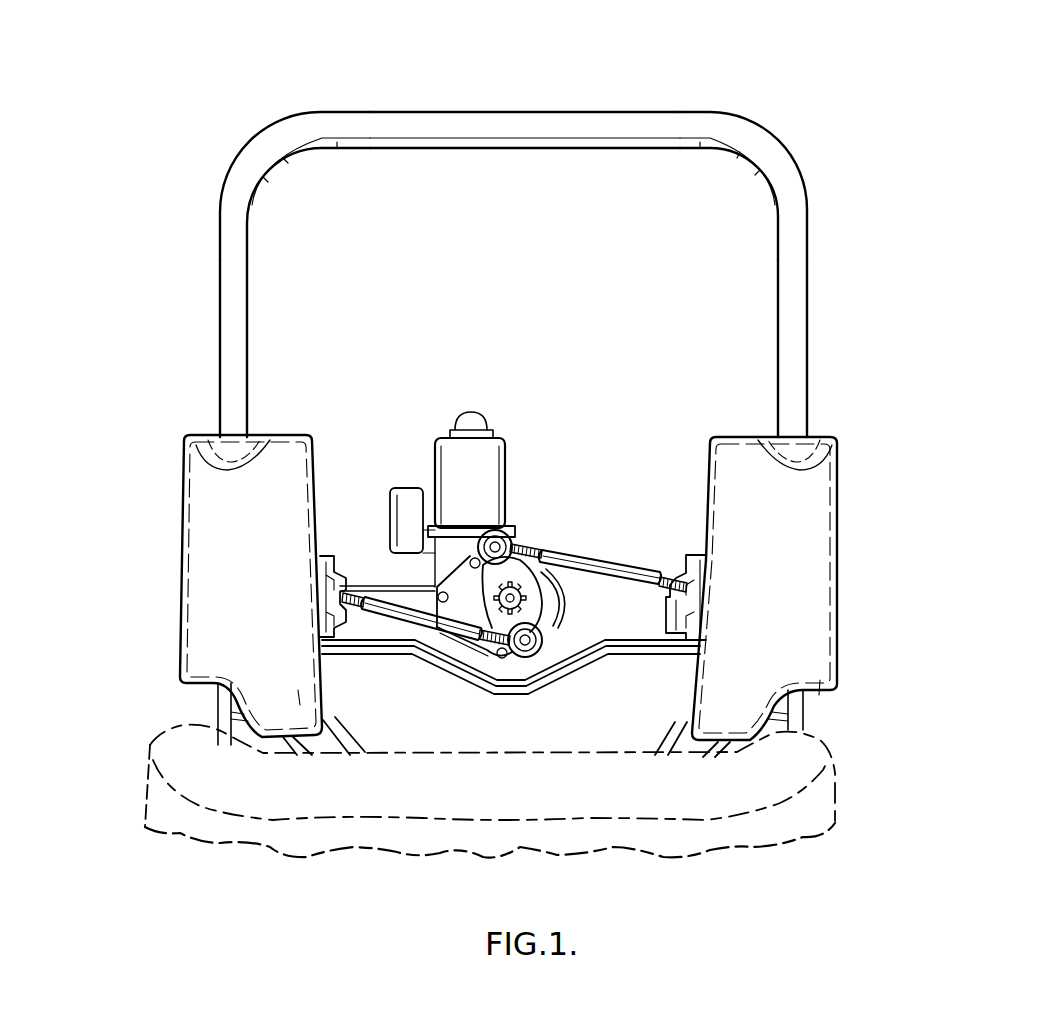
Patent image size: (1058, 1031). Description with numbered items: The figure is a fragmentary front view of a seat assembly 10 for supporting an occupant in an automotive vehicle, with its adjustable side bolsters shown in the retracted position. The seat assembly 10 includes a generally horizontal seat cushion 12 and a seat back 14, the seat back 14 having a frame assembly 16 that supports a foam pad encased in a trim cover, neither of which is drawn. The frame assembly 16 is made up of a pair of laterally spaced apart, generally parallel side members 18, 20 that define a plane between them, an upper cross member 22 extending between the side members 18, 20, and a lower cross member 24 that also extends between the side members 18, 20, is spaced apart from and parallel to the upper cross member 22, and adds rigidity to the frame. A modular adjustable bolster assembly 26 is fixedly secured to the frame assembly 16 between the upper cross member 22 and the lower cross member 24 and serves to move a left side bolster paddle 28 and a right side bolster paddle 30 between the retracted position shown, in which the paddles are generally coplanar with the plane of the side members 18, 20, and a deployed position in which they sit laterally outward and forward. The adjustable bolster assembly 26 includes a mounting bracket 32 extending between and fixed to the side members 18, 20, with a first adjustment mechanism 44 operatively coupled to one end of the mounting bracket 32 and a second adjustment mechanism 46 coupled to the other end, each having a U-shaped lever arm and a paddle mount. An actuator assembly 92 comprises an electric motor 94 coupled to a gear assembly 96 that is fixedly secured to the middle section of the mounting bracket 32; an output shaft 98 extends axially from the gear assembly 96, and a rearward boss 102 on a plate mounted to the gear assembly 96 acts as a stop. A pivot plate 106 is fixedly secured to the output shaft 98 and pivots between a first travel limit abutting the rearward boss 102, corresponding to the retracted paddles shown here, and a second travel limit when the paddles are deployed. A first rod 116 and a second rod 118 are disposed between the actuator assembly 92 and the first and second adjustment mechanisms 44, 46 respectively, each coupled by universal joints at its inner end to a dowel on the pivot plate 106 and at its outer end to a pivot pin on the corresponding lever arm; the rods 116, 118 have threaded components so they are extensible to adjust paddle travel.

The seat assembly 10 is at (685, 92).
The seat cushion 12 is at (142, 812).
The seat back 14 is at (256, 143).
The frame assembly 16 is at (780, 160).
The side member 18 is at (795, 357).
The side member 20 is at (220, 347).
The upper cross member 22 is at (551, 130).
The lower cross member 24 is at (343, 732).
The adjustable bolster assembly 26 is at (447, 667).
The left side bolster paddle 28 is at (783, 593).
The right side bolster paddle 30 is at (254, 583).
The mounting bracket 32 is at (600, 655).
The first adjustment mechanism 44 is at (686, 542).
The second adjustment mechanism 46 is at (335, 542).
The actuator assembly 92 is at (433, 430).
The electric motor 94 is at (505, 470).
The gear assembly 96 is at (565, 607).
The output shaft 98 is at (500, 598).
The rearward boss 102 is at (466, 547).
The pivot plate 106 is at (545, 655).
The first rod 116 is at (625, 568).
The second rod 118 is at (395, 635).